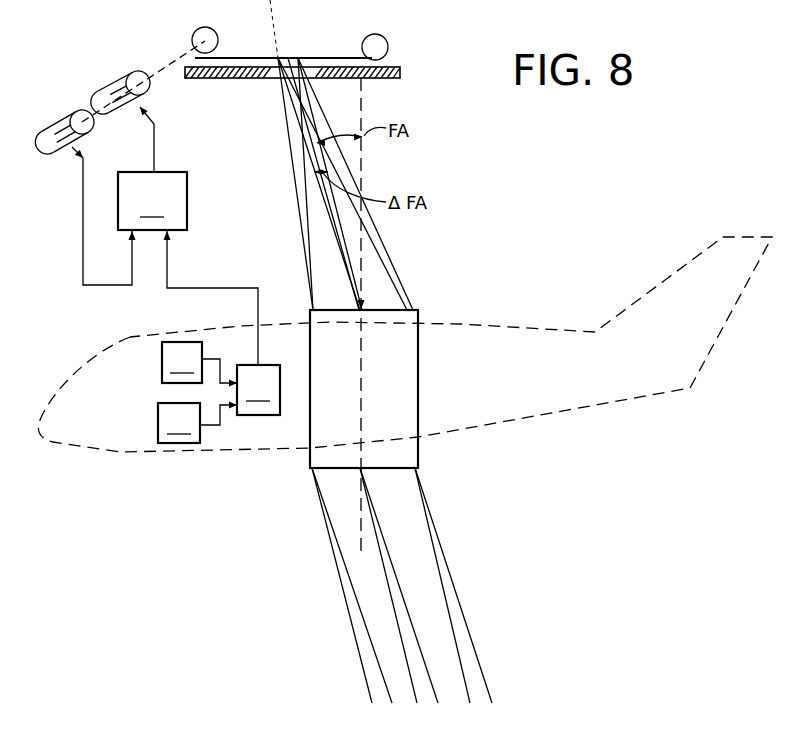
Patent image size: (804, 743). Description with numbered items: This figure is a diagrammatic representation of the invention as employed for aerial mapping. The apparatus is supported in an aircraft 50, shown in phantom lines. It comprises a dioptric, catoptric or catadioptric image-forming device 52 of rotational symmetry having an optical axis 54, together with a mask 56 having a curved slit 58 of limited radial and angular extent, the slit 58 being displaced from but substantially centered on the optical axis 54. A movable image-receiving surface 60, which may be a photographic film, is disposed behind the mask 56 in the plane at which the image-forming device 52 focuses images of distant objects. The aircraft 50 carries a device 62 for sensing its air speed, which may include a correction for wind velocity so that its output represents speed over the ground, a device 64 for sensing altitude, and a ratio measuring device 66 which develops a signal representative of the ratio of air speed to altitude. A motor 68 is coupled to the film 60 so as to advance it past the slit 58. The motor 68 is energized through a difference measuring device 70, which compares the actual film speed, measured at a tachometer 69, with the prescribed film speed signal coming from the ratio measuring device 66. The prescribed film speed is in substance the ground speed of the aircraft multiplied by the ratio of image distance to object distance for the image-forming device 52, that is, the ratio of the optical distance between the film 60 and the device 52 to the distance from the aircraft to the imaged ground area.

The aircraft 50 is at (530, 327).
The image-forming device 52 is at (418, 394).
The optical axis 54 is at (366, 158).
The mask 56 is at (398, 79).
The slit 58 is at (282, 80).
The image-receiving surface 60 is at (327, 58).
The air speed sensing device 62 is at (199, 364).
The altitude sensing device 64 is at (197, 423).
The ratio measuring device 66 is at (222, 323).
The motor 68 is at (126, 80).
The tachometer 69 is at (62, 130).
The difference measuring device 70 is at (152, 168).